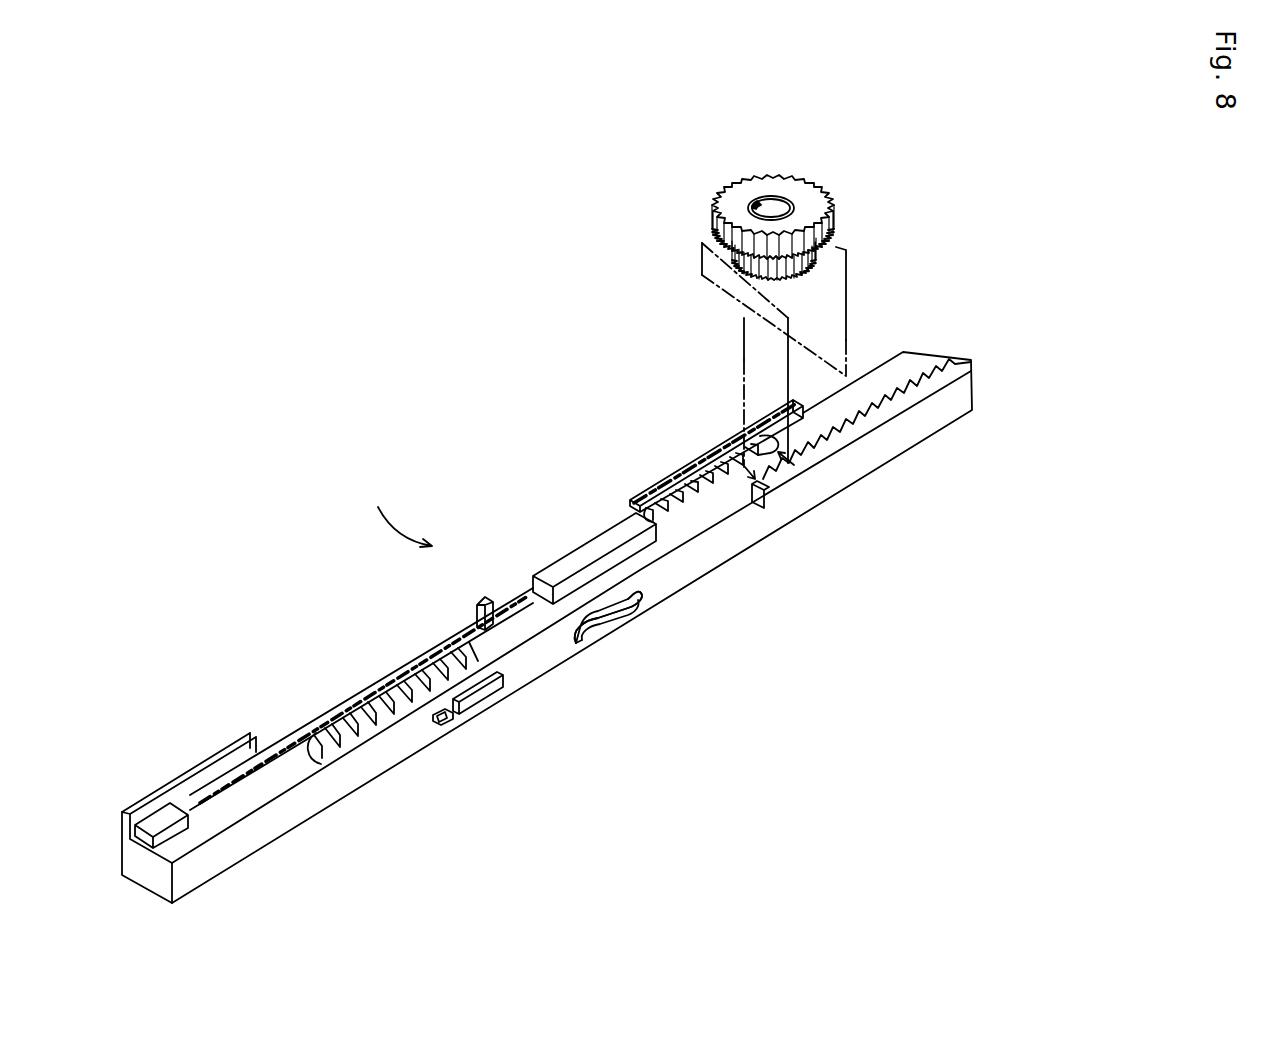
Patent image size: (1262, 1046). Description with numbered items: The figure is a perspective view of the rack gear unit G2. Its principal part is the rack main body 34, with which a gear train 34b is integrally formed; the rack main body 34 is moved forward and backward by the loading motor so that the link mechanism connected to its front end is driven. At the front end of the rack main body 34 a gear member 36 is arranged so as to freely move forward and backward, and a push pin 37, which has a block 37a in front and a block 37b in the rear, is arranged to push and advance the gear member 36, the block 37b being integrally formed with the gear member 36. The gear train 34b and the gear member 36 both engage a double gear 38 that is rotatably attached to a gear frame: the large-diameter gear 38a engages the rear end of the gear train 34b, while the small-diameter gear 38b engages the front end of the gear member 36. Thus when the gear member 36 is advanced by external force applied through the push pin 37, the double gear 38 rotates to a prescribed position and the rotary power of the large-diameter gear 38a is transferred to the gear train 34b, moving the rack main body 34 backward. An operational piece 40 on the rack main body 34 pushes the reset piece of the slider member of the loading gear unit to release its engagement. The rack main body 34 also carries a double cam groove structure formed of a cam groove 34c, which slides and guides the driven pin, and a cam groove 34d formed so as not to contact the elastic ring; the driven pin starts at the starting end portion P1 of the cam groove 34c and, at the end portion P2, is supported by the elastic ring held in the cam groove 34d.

The rack main body 34 is at (700, 557).
The gear train 34b is at (913, 362).
The cam groove 34c is at (604, 628).
The cam groove 34d is at (608, 617).
The gear member 36 is at (697, 480).
The push pin 37 is at (373, 692).
The block 37a is at (160, 833).
The block 37b is at (573, 558).
The double gear 38 is at (808, 202).
The large-diameter gear 38a is at (835, 228).
The small-diameter gear 38b is at (797, 280).
The operational piece 40 is at (483, 720).
The starting end portion P1 is at (643, 608).
The end portion P2 is at (582, 643).
The rack gear unit G2 is at (387, 495).